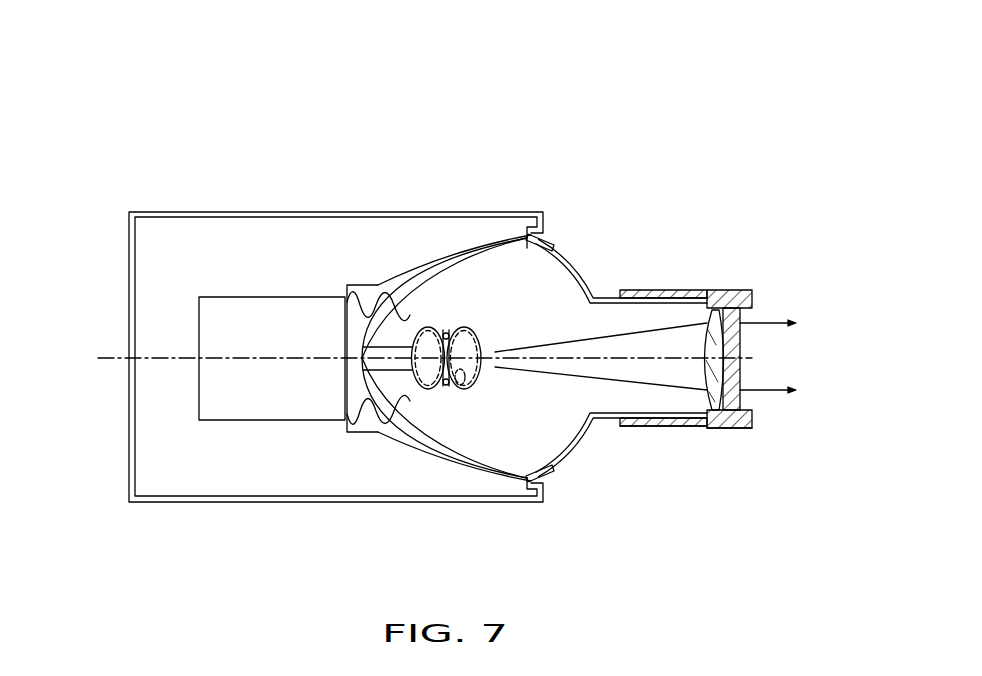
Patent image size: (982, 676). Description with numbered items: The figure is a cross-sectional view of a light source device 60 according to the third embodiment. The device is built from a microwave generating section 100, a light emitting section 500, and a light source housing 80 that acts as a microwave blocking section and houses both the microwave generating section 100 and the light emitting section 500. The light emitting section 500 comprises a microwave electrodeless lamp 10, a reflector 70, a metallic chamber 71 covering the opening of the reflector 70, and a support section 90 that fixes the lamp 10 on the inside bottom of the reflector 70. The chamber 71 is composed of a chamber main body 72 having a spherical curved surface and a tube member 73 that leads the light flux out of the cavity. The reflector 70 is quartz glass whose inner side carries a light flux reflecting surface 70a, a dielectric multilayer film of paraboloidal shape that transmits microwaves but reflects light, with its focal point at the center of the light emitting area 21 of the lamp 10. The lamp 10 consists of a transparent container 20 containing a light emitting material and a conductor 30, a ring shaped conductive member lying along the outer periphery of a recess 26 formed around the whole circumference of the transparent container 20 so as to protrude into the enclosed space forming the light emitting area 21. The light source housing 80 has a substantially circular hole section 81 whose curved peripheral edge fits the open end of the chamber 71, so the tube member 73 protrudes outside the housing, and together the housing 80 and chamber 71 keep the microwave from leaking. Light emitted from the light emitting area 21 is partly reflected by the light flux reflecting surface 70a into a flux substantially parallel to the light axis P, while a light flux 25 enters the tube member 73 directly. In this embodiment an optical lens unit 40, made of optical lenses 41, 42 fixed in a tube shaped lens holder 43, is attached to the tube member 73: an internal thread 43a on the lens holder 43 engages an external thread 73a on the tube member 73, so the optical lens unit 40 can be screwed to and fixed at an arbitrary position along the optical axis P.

The light source device 60 is at (430, 135).
The light source housing 80 is at (244, 212).
The light emitting section 500 is at (382, 255).
The reflector 70 is at (423, 260).
The light flux reflecting surface 70a is at (530, 237).
The conductor 30 is at (447, 332).
The microwave generating section 100 is at (245, 297).
The support section 90 is at (386, 372).
The light axis P is at (107, 357).
The microwave electrodeless lamp 10 is at (484, 389).
The transparent container 20 is at (481, 347).
The light emitting area 21 is at (463, 333).
The light flux 25 is at (544, 366).
The recess 26 is at (462, 390).
The chamber 71 is at (702, 204).
The chamber main body 72 is at (578, 268).
The tube member 73 is at (612, 291).
The external thread 73a is at (610, 427).
The hole section 81 is at (556, 248).
The optical lens unit 40 is at (750, 265).
The optical lens 41 is at (739, 346).
The optical lens 42 is at (703, 375).
The lens holder 43 is at (668, 290).
The internal thread 43a is at (666, 428).